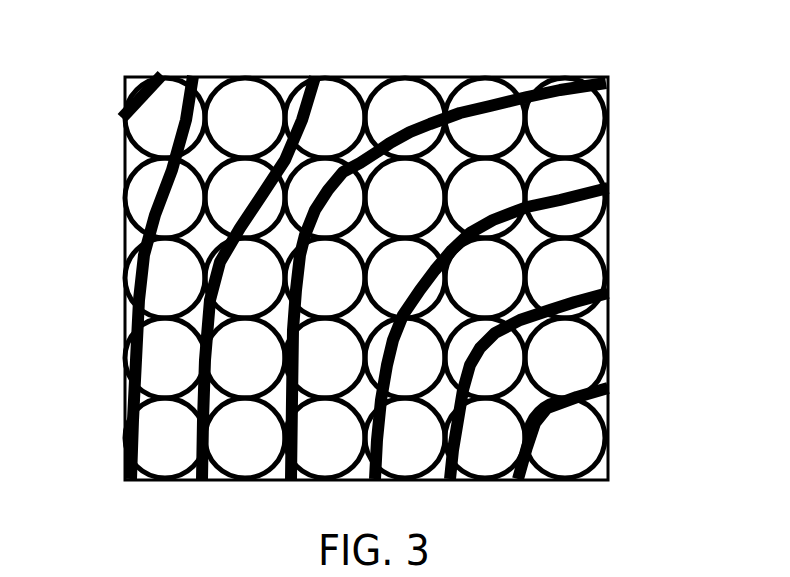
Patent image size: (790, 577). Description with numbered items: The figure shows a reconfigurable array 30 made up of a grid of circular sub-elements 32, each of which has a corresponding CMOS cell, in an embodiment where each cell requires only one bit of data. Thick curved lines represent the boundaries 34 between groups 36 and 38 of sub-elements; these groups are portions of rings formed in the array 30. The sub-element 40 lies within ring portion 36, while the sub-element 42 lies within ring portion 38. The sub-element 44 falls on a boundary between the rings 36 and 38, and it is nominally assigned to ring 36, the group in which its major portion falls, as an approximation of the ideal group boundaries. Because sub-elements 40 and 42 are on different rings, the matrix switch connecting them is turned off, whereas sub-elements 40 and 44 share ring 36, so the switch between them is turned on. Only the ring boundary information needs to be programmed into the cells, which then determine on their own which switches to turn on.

The reconfigurable array 30 is at (603, 63).
The sub-elements 32 is at (583, 252).
The boundaries 34 is at (533, 437).
The group (ring portion) 36 is at (330, 100).
The group (ring portion) 38 is at (245, 100).
The sub-element 40 is at (207, 149).
The sub-element 42 is at (228, 131).
The sub-element 44 is at (248, 218).